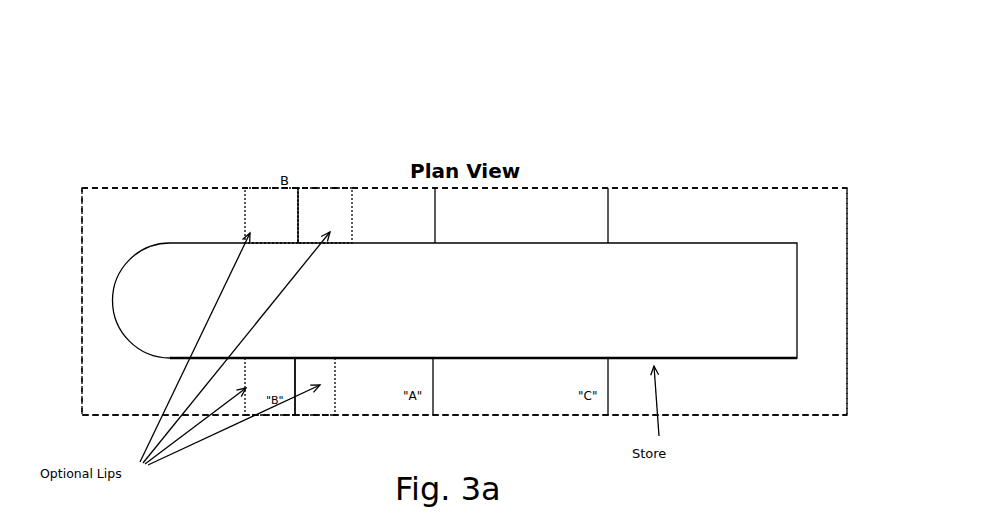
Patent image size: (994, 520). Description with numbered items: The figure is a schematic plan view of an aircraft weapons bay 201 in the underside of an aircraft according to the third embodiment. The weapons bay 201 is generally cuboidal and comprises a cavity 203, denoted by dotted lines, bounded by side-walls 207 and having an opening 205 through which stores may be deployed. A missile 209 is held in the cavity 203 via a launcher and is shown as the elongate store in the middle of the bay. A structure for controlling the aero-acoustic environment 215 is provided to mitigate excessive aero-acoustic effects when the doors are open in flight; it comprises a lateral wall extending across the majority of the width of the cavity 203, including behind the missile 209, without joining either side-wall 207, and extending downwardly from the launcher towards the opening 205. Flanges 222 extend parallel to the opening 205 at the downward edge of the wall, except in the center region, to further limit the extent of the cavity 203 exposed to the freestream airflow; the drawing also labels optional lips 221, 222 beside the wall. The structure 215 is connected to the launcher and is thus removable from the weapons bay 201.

The weapons bay 201 is at (148, 75).
The cavity 203 is at (781, 216).
The opening 205 is at (107, 230).
The side-walls 207 is at (694, 187).
The missile 209 is at (477, 313).
The structure for controlling the aero-acoustic environment 215 is at (299, 218).
The optional lip 221 is at (324, 301).
The flanges 222 is at (271, 301).